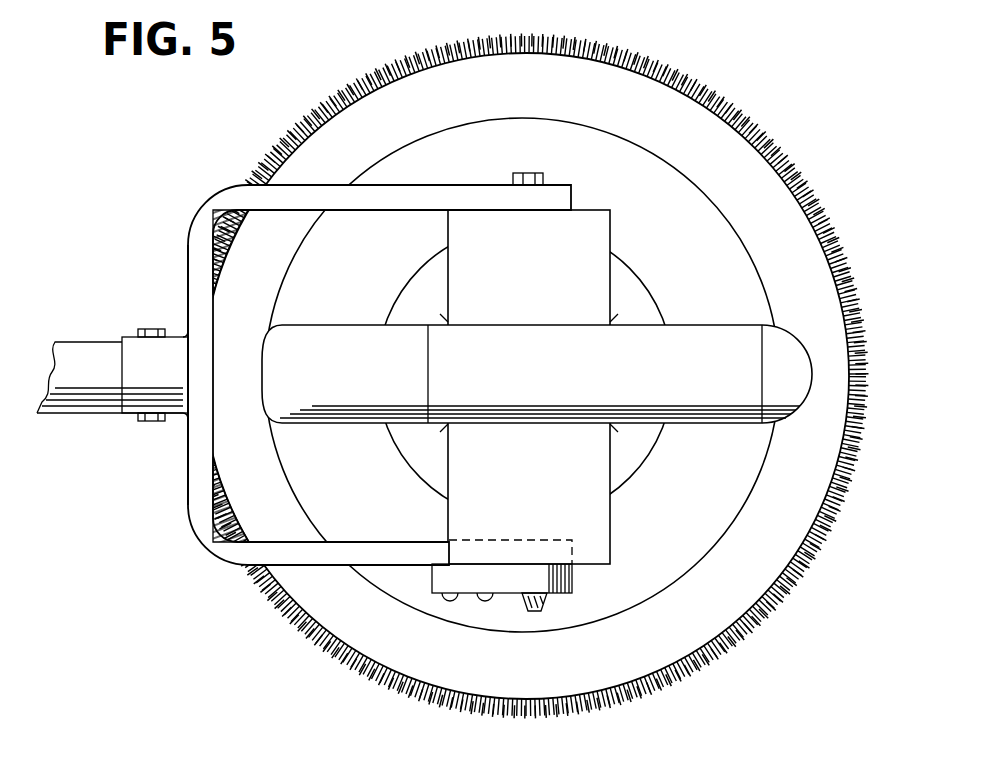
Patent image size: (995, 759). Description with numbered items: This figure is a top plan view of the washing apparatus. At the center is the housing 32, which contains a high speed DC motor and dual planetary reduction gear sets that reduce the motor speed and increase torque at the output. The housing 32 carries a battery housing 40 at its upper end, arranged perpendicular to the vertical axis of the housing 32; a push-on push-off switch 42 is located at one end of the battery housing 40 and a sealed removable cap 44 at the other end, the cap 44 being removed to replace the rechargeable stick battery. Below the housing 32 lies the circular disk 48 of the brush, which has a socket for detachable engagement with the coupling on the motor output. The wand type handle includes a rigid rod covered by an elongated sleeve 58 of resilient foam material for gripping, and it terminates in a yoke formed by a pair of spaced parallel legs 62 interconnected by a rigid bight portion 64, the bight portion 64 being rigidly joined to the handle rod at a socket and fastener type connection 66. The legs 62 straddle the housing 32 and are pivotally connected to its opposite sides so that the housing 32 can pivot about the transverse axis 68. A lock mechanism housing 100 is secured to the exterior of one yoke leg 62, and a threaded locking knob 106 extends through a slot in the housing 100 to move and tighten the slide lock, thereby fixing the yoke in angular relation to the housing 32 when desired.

The housing 32 is at (596, 261).
The battery housing 40 is at (703, 340).
The push-on push-off switch 42 is at (797, 352).
The sealed removable cap 44 is at (343, 410).
The circular disk 48 is at (707, 140).
The elongated sleeve 58 is at (84, 400).
The legs 62 is at (307, 197).
The bight portion 64 is at (198, 282).
The socket and fastener type connection 66 is at (135, 352).
The transverse axis 68 is at (530, 173).
The housing 100 is at (560, 594).
The threaded locking knob 106 is at (525, 605).